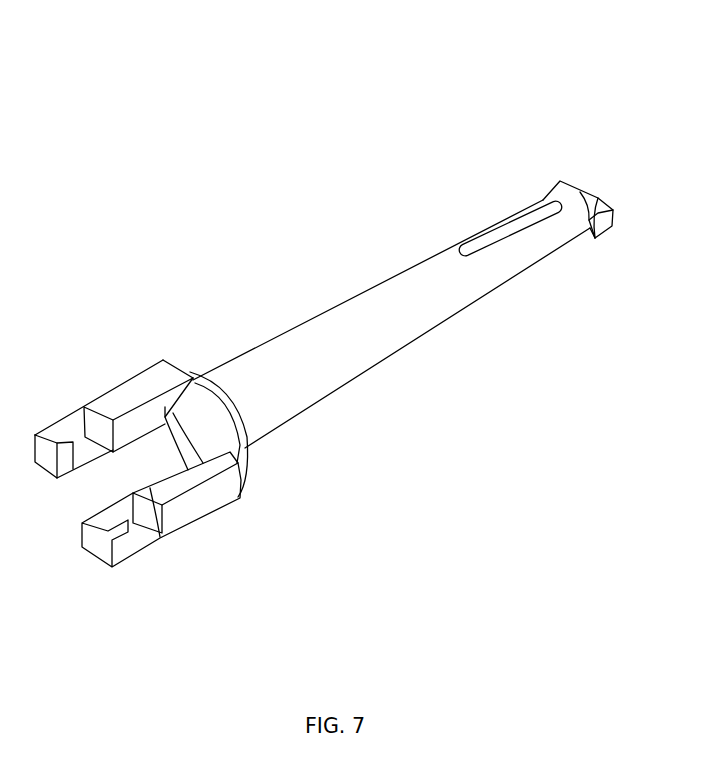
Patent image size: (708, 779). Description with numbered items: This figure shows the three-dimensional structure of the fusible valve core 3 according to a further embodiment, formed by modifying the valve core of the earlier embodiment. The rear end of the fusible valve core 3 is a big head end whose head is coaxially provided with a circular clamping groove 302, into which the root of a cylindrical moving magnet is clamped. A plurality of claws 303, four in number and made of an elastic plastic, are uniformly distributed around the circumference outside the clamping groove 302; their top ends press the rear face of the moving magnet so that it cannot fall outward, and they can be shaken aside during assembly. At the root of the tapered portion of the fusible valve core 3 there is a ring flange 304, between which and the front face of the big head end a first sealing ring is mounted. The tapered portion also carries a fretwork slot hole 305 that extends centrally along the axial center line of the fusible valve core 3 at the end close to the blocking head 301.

The fusible valve core 3 is at (330, 305).
The blocking head 301 is at (541, 184).
The clamping groove 302 is at (177, 480).
The claws 303 is at (111, 405).
The ring flange 304 is at (245, 428).
The fretwork slot hole 305 is at (497, 247).